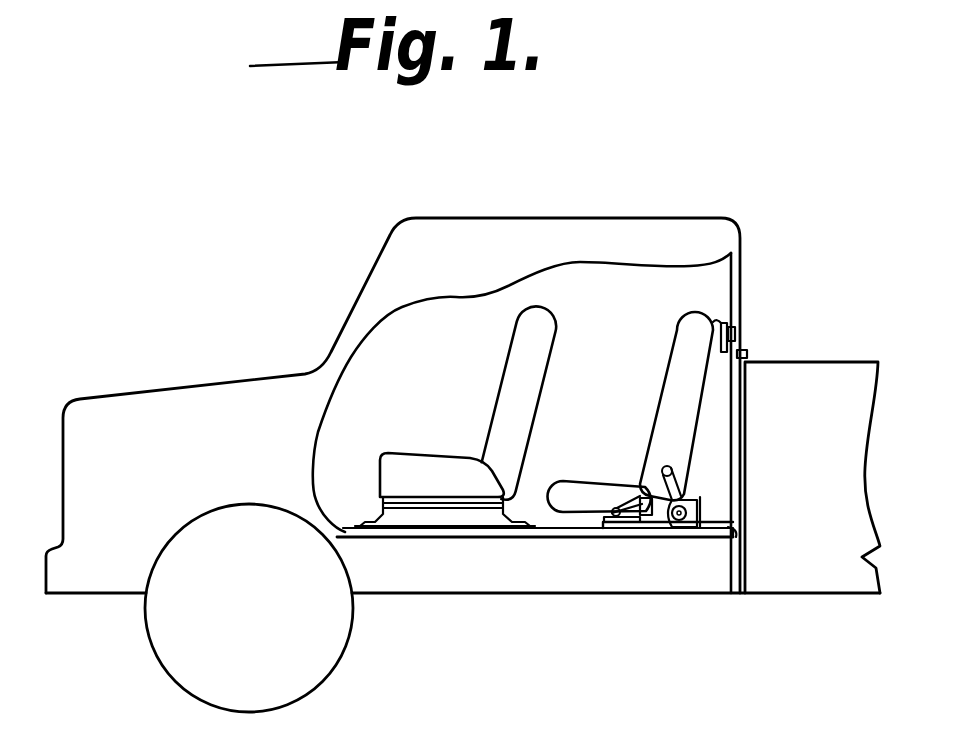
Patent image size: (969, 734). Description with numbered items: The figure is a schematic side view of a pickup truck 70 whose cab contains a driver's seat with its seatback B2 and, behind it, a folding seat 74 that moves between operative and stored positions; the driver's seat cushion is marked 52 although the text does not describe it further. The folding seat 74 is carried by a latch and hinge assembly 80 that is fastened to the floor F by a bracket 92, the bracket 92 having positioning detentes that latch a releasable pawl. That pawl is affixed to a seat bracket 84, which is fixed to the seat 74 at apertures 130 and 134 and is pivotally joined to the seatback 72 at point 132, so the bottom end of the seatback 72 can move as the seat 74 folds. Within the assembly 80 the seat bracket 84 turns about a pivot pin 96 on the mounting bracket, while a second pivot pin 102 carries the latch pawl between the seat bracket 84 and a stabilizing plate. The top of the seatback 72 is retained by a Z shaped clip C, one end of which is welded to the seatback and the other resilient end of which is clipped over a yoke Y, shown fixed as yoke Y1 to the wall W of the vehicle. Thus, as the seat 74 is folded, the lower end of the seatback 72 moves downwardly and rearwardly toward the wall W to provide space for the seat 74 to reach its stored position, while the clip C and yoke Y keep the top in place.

The pickup truck 70 is at (358, 298).
The clip C is at (717, 300).
The floor F is at (538, 537).
The seatback B2 is at (515, 354).
The front seat cushion 52 is at (407, 454).
The seatback 72 is at (678, 383).
The folding seat 74 is at (567, 482).
The aperture 130 is at (612, 506).
The aperture 134 is at (640, 494).
The pivot point 132 is at (672, 470).
The seat bracket 84 is at (688, 507).
The pivot pin 96 is at (700, 512).
The bracket 92 is at (733, 528).
The latch and hinge assembly 80 is at (668, 538).
The pivot pin 102 is at (647, 523).
The yoke Y1 is at (724, 314).
The yoke Y is at (732, 333).
The wall W is at (745, 358).